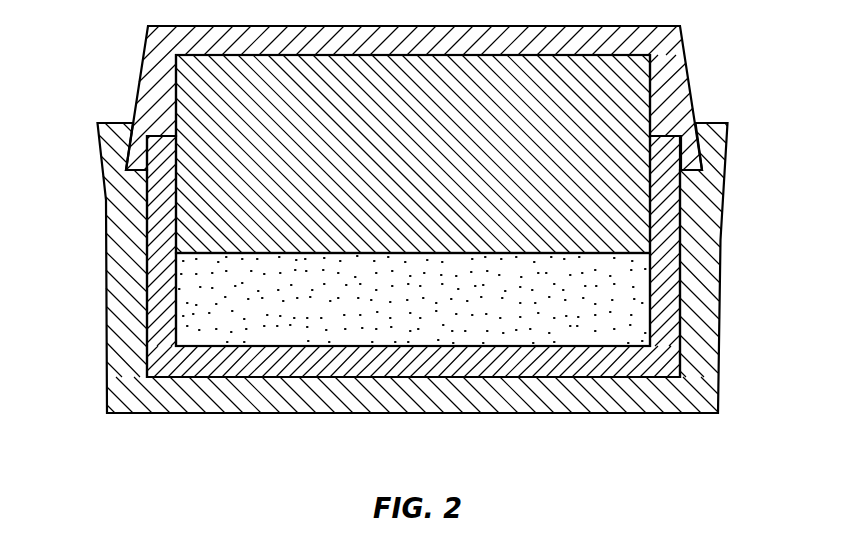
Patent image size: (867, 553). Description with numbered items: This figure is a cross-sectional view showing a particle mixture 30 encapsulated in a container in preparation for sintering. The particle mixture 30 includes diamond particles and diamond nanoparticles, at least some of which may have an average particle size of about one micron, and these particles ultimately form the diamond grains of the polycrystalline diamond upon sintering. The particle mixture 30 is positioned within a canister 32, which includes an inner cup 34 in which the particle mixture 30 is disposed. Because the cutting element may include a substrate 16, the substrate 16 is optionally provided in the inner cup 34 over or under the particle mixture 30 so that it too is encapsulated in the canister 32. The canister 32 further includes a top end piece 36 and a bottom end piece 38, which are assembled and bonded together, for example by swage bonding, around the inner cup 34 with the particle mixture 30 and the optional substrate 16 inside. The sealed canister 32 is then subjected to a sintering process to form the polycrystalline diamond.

The substrate 16 is at (615, 92).
The particle mixture 30 is at (628, 298).
The canister 32 is at (399, 251).
The inner cup 34 is at (281, 363).
The top end piece 36 is at (157, 83).
The bottom end piece 38 is at (118, 240).